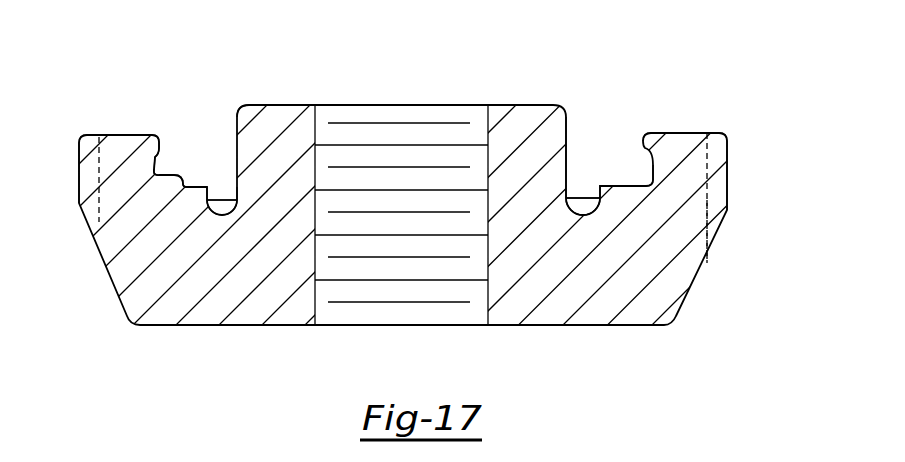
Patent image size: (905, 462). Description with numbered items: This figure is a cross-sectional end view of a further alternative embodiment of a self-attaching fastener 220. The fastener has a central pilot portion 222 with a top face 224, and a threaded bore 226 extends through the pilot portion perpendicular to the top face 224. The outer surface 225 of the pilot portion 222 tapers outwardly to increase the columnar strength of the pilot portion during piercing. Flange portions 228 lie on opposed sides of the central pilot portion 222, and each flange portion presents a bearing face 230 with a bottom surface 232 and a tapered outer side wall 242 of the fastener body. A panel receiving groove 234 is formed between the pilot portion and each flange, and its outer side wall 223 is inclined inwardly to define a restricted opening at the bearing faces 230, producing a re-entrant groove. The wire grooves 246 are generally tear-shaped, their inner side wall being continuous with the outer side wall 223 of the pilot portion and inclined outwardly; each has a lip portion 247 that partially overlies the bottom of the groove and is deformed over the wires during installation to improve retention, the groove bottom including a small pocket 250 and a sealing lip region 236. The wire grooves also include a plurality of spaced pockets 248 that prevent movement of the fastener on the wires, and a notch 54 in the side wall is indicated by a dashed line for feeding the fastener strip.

The self-attaching fastener 220 is at (547, 54).
The central pilot portion 222 is at (274, 98).
The outer side wall 223 is at (164, 156).
The top face 224 is at (293, 105).
The outer surface 225 is at (566, 127).
The threaded bore 226 is at (315, 163).
The flange portions 228 is at (110, 134).
The bearing faces 230 is at (699, 133).
The bottom surface 232 is at (197, 326).
The panel receiving groove 234 is at (622, 123).
The lip 236 is at (156, 178).
The outer wall 242 is at (727, 192).
The wire grooves 246 is at (589, 210).
The lip portion 247 is at (222, 180).
The spaced pockets 248 is at (218, 211).
The pocket 250 is at (583, 198).
The notches 54 is at (716, 234).